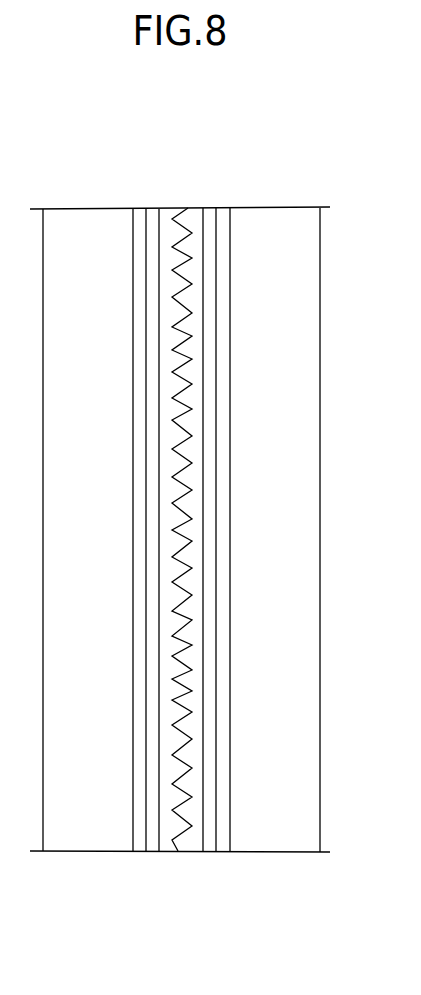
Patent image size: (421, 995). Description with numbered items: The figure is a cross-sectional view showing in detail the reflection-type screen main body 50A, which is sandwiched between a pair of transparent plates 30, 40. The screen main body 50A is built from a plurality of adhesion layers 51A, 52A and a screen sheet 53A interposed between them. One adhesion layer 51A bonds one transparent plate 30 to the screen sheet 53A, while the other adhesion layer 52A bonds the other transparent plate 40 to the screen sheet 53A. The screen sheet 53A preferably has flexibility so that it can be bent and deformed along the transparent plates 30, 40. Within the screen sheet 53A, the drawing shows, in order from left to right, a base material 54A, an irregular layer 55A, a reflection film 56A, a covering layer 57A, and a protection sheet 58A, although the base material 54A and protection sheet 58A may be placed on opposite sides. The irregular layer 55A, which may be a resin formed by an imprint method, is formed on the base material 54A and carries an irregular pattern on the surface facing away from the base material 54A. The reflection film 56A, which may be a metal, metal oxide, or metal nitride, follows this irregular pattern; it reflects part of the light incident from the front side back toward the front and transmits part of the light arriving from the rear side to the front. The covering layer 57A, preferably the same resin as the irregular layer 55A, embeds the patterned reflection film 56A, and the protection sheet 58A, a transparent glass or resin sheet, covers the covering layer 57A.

The transparent plate 30 is at (88, 220).
The transparent plate 40 is at (275, 218).
The screen main body 50A is at (263, 154).
The adhesion layer 51A is at (140, 220).
The adhesion layer 52A is at (223, 220).
The screen sheet 53A is at (217, 200).
The base material 54A is at (150, 840).
The irregular layer 55A is at (165, 840).
The reflection film 56A is at (176, 842).
The covering layer 57A is at (195, 842).
The protection sheet 58A is at (210, 842).